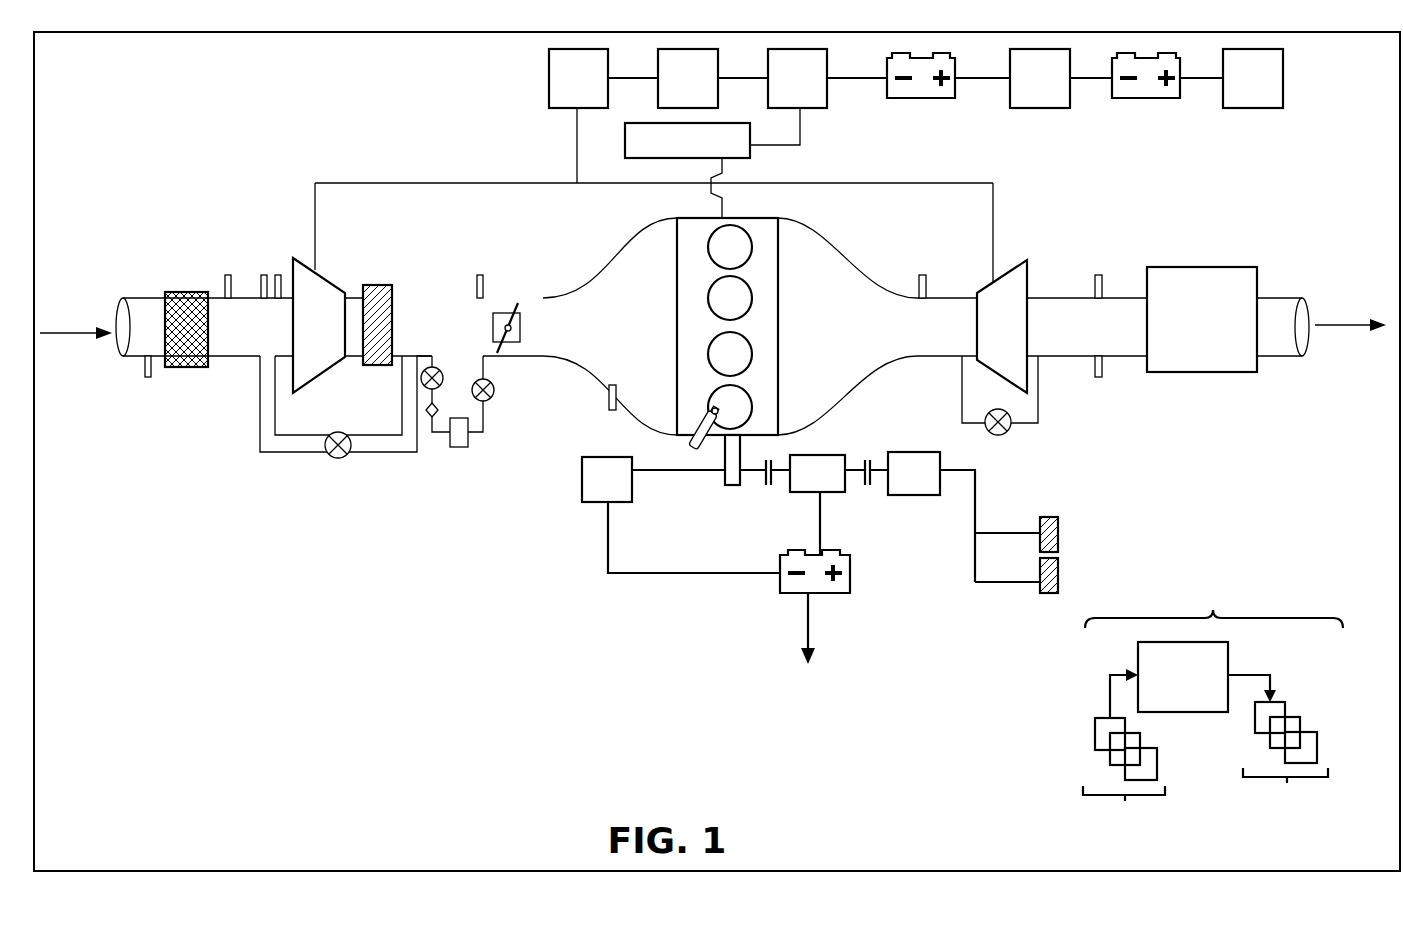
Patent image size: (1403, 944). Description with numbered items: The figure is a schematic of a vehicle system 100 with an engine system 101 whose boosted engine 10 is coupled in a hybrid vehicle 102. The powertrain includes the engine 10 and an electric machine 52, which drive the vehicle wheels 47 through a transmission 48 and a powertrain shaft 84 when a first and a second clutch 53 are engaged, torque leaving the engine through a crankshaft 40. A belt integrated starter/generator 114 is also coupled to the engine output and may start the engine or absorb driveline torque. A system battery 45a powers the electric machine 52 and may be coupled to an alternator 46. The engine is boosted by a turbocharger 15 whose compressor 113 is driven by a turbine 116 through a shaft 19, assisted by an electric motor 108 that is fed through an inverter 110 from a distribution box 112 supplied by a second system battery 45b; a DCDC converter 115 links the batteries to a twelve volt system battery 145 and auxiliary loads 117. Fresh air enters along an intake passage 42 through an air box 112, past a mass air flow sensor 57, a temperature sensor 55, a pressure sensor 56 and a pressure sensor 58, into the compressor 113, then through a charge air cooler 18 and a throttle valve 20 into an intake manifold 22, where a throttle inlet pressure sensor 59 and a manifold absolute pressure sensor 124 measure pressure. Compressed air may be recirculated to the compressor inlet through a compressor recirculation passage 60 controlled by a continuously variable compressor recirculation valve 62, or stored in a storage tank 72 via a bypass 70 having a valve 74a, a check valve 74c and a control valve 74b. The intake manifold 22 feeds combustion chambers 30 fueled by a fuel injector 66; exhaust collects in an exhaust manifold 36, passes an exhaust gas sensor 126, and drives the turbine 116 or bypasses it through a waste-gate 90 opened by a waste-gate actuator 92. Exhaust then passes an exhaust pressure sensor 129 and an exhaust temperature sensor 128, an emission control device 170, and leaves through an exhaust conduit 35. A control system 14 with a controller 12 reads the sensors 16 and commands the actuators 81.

The engine 10 is at (778, 308).
The controller 12 is at (1183, 677).
The control system 14 is at (1214, 596).
The turbocharger 15 is at (345, 215).
The sensors 16 is at (1124, 755).
The charge air cooler 18 is at (378, 285).
The shaft 19 is at (893, 183).
The throttle valve 20 is at (520, 338).
The intake manifold 22 is at (610, 326).
The combustion chambers 30 is at (752, 240).
The exhaust conduit 35 is at (1280, 298).
The exhaust manifold 36 is at (877, 326).
The crankshaft 40 is at (725, 482).
The intake passage 42 is at (130, 357).
The system battery 45a is at (818, 593).
The system battery 45b is at (938, 98).
The alternator 46 is at (681, 515).
The vehicle wheels 47 is at (1040, 523).
The transmission 48 is at (914, 473).
The electric machine 52 is at (802, 494).
The clutches 53 is at (767, 486).
The temperature sensor 55 is at (264, 275).
The pressure sensor 56 is at (278, 275).
The mass air flow sensor 57 is at (228, 275).
The pressure sensor 58 is at (148, 378).
The throttle inlet pressure sensor 59 is at (480, 275).
The compressor recirculation passage 60 is at (258, 408).
The continuously variable compressor recirculation valve 62 is at (332, 457).
The fuel injector 66 is at (692, 446).
The bypass 70 is at (444, 434).
The storage tank 72 is at (468, 446).
The valve 74a is at (440, 370).
The control valve 74b is at (491, 398).
The check valve 74c is at (438, 410).
The actuators 81 is at (1279, 748).
The powertrain shaft 84 is at (968, 483).
The waste-gate 90 is at (962, 402).
The waste-gate actuator 92 is at (1007, 432).
The vehicle system 100 is at (382, 628).
The engine system 101 is at (1052, 180).
The vehicle 102 is at (1305, 32).
The electric motor 108 is at (578, 116).
The inverter 110 is at (663, 78).
The 48 V distribution box 112 is at (172, 292).
The compressor 113 is at (319, 325).
The belt integrated starter/generator 114 is at (687, 170).
The DCDC converter 115 is at (1061, 78).
The turbine 116 is at (1002, 326).
The auxiliary 12 V loads 117 is at (1253, 78).
The manifold absolute pressure sensor 124 is at (609, 396).
The exhaust gas sensor 126 is at (922, 275).
The exhaust temperature sensor 128 is at (1099, 377).
The exhaust pressure sensor 129 is at (1099, 275).
The 12 V system battery 145 is at (1148, 98).
The emission control device 170 is at (1190, 267).